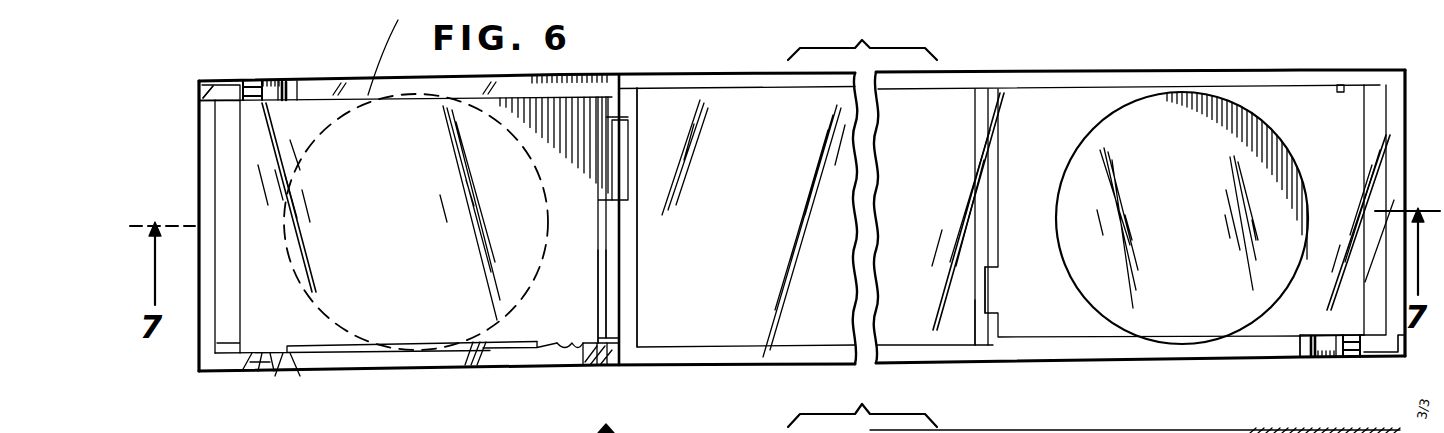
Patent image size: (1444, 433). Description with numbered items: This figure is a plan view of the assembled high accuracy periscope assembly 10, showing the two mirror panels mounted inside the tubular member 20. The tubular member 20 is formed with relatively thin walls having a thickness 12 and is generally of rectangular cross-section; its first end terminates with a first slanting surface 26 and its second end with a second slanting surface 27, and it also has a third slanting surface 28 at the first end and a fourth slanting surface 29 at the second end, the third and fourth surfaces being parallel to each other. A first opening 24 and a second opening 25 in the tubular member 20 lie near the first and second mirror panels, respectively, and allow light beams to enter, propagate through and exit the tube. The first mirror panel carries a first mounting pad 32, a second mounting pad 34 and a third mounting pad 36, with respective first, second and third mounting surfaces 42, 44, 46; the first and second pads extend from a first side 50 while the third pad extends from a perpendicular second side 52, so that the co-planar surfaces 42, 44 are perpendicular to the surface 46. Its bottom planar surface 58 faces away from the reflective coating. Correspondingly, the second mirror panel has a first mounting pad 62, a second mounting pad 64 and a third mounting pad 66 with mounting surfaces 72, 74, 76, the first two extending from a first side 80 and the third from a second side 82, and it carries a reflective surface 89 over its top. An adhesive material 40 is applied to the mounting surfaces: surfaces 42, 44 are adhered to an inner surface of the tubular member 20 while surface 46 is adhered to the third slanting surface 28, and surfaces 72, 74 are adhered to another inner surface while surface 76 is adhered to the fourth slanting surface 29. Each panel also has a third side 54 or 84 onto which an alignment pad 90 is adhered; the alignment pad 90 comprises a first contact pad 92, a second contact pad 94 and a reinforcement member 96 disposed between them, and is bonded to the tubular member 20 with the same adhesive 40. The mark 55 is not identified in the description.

The high accuracy periscope assembly 10 is at (1250, 45).
The thickness 12 is at (746, 77).
The tubular member 20 is at (1407, 80).
The first opening 24 is at (300, 157).
The second opening 25 is at (1062, 150).
The first slanting surface 26 is at (422, 388).
The second slanting surface 27 is at (1165, 85).
The third slanting surface 28 is at (636, 262).
The fourth slanting surface 29 is at (978, 115).
The first mounting pad 32 is at (279, 370).
The second mounting pad 34 is at (556, 352).
The third mounting pad 36 is at (615, 83).
The adhesive material 40 is at (312, 92).
The first mounting surface 42 is at (252, 367).
The second mounting surface 44 is at (622, 362).
The third mounting surface 46 is at (620, 138).
The first side 50 is at (485, 353).
The second side 52 is at (602, 322).
The third side 54 is at (368, 90).
The clip 55 is at (1101, 92).
The bottom planar surface 58 is at (416, 222).
The first mounting pad 62 is at (1327, 90).
The second mounting pad 64 is at (1027, 93).
The third mounting pad 66 is at (998, 297).
The first mounting surface 72 is at (1336, 74).
The second mounting surface 74 is at (1022, 80).
The third mounting surface 76 is at (976, 307).
The first side 80 is at (1238, 90).
The second side 82 is at (985, 163).
The third side 84 is at (1106, 342).
The reflective surface 89 is at (1192, 195).
The alignment pad 90 is at (243, 80).
The first contact pad 92 is at (272, 91).
The second contact pad 94 is at (292, 82).
The reinforcement member 96 is at (283, 80).